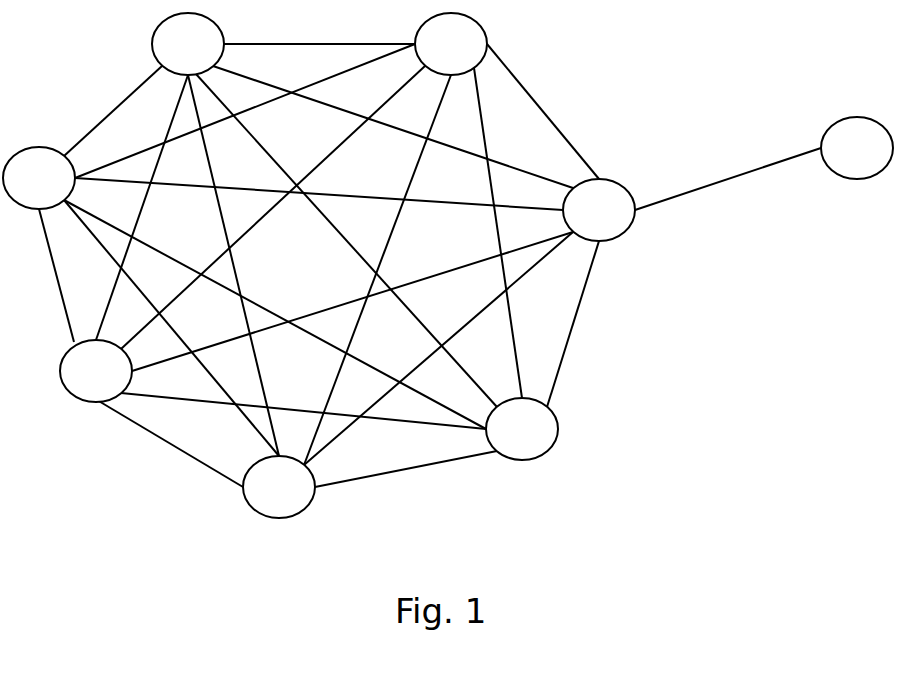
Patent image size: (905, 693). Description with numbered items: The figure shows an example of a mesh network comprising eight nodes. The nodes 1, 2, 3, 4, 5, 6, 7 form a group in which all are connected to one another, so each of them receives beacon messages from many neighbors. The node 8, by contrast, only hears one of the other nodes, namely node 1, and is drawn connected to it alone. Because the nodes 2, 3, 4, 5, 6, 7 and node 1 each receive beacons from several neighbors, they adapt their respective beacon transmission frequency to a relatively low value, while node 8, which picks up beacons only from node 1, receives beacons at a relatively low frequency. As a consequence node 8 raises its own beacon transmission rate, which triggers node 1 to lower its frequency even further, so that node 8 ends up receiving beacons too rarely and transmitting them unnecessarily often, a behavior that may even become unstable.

The node n= 1 is at (599, 210).
The node n= 2 is at (522, 429).
The node n= 3 is at (279, 487).
The node n= 4 is at (96, 371).
The node n= 5 is at (39, 178).
The node n= 6 is at (188, 44).
The node n= 7 is at (451, 44).
The node n= 8 is at (857, 148).